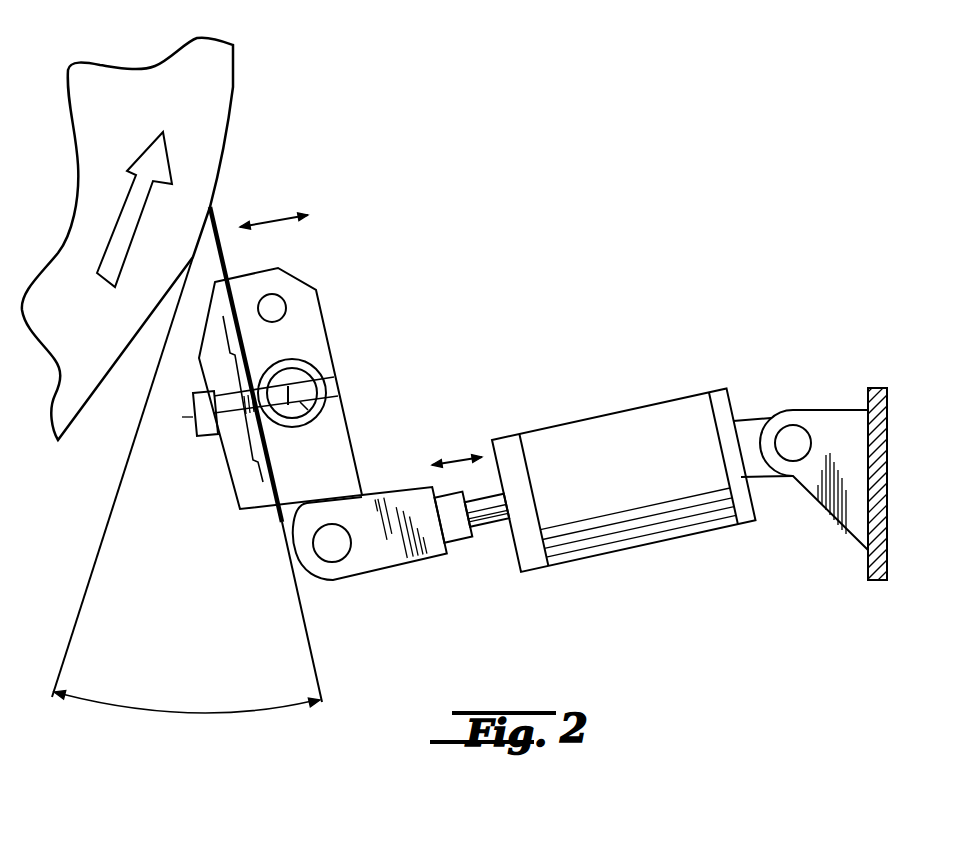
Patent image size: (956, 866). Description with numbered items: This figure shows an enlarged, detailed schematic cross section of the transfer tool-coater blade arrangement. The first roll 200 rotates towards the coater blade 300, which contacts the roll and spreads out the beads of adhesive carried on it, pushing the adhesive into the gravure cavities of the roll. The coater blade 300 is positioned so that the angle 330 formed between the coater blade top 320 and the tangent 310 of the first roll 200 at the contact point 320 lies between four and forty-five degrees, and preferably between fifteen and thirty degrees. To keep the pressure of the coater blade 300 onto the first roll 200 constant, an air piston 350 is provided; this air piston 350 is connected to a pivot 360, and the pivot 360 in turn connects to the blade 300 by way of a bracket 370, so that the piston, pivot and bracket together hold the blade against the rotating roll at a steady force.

The first roll 200 is at (213, 82).
The coater blade top 320 is at (212, 203).
The bracket 370 is at (297, 330).
The pivot 360 is at (327, 413).
The air piston 350 is at (651, 512).
The tangent 310 is at (88, 576).
The coater blade 300 is at (312, 650).
The angle 330 is at (197, 713).